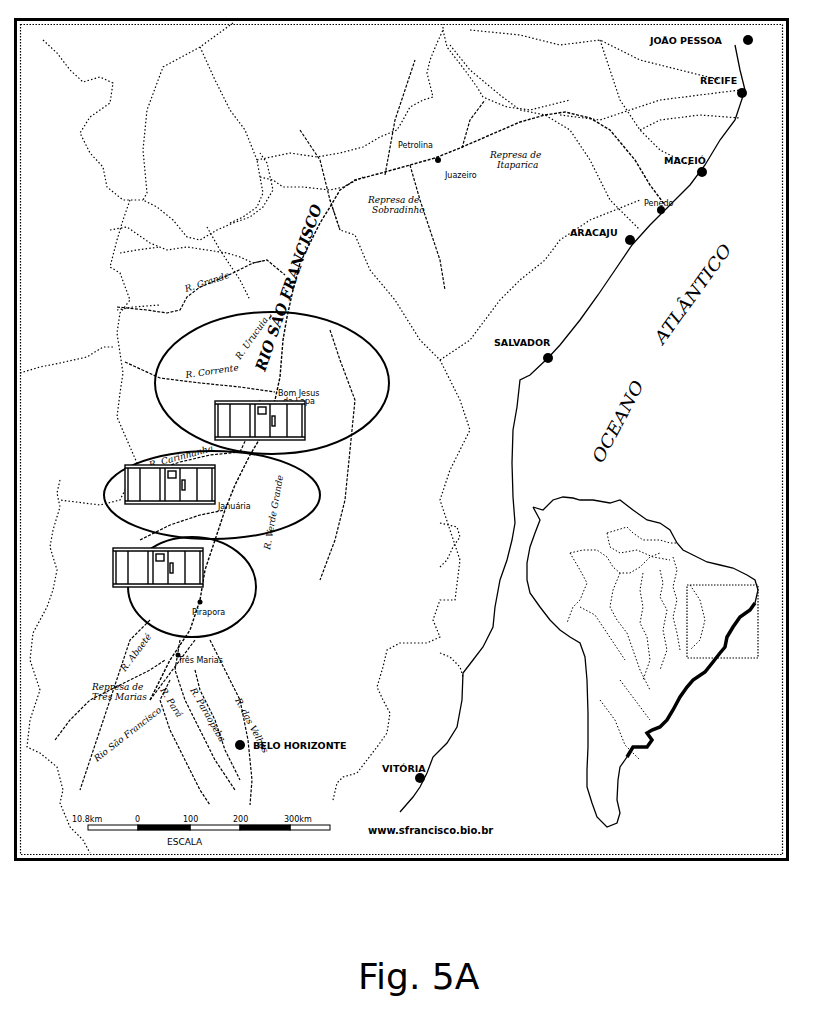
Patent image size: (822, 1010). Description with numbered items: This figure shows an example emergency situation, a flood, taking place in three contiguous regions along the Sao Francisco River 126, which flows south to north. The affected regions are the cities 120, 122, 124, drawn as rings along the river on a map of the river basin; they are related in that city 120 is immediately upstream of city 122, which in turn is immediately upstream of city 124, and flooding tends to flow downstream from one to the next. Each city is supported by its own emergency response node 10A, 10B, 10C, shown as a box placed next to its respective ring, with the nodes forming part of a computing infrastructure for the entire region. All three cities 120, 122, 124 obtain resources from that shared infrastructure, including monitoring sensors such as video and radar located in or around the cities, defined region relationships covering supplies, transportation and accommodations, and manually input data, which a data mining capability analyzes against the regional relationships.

The emergency response node 10A is at (113, 590).
The emergency response node 10B is at (125, 465).
The emergency response node 10C is at (215, 405).
The city 120 is at (257, 597).
The city 122 is at (320, 493).
The city 124 is at (377, 425).
The Sao Francisco River 126 is at (288, 275).